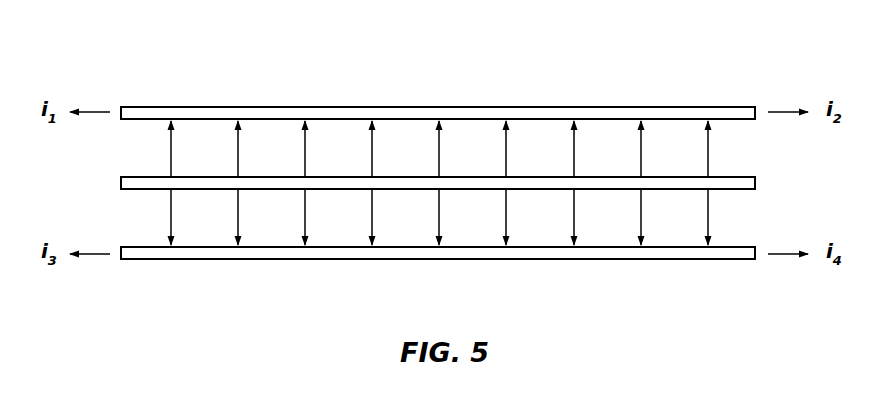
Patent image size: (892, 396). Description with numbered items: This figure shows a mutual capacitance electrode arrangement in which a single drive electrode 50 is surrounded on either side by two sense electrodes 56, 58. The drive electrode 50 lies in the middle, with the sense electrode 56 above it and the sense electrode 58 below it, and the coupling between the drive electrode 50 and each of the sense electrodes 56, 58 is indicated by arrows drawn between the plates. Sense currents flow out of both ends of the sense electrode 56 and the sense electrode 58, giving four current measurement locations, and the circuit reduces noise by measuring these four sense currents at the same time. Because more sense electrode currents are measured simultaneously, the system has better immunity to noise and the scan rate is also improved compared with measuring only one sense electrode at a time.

The sense electrode 56 is at (727, 107).
The drive electrode 50 is at (756, 183).
The sense electrode 58 is at (733, 260).